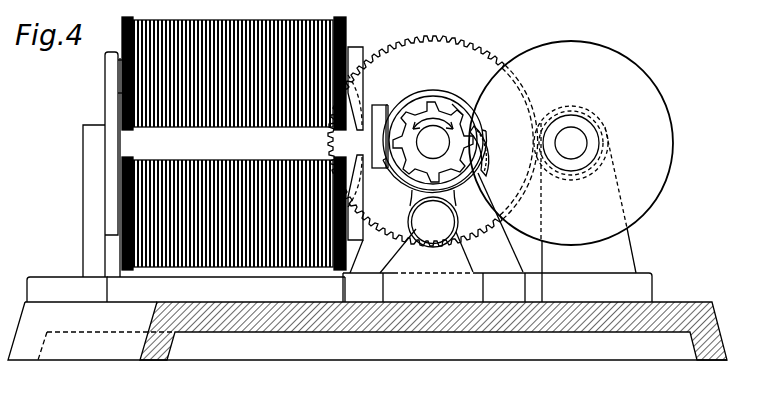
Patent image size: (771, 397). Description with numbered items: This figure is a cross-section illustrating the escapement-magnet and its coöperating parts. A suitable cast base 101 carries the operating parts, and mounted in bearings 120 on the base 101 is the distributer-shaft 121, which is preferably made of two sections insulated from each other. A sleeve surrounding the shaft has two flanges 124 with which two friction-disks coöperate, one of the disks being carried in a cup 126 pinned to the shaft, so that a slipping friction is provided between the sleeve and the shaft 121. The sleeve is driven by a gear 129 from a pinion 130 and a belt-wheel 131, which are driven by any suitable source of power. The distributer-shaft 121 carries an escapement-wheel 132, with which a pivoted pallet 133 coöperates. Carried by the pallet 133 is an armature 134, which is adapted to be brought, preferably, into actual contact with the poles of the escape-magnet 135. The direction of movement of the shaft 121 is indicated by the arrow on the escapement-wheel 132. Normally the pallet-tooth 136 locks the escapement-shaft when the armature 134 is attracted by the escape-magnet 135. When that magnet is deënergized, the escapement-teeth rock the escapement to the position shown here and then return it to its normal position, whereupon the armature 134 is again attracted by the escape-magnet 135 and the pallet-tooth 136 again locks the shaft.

The cast base 101 is at (714, 316).
The bearings 120 is at (468, 259).
The distributer-shaft 121 is at (433, 142).
The flanges 124 is at (412, 90).
The cup 126 is at (458, 110).
The gear 129 is at (418, 38).
The pinion 130 is at (598, 125).
The belt-wheel 131 is at (665, 116).
The escapement-wheel 132 is at (436, 106).
The pivoted pallet 133 is at (468, 178).
The armature 134 is at (379, 105).
The escape-magnet 135 is at (214, 153).
The pallet-tooth 136 is at (490, 132).